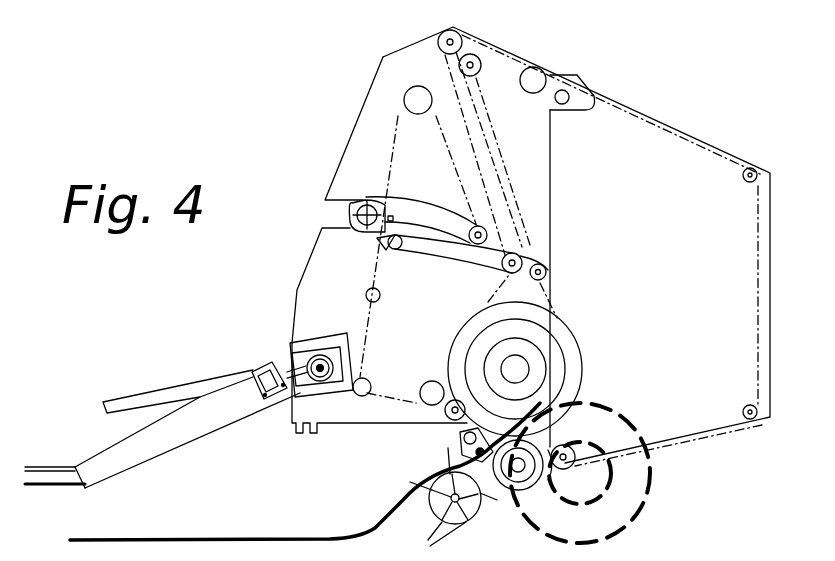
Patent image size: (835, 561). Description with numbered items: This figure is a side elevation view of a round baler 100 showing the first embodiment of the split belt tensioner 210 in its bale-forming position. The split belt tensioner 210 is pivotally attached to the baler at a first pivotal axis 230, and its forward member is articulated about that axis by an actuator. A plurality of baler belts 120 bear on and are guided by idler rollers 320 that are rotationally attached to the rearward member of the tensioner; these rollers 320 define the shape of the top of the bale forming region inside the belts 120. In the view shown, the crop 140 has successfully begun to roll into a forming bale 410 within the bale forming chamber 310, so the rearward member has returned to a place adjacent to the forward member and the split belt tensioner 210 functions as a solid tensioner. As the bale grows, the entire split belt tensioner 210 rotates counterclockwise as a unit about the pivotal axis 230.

The baler 100 is at (710, 485).
The baler belts 120 is at (446, 132).
The crop 140 is at (240, 530).
The split belt tensioner 210 is at (430, 259).
The first pivotal axis 230 is at (345, 212).
The bale forming chamber 310 is at (631, 287).
The idler rollers 320 is at (545, 272).
The forming bale 410 is at (575, 362).